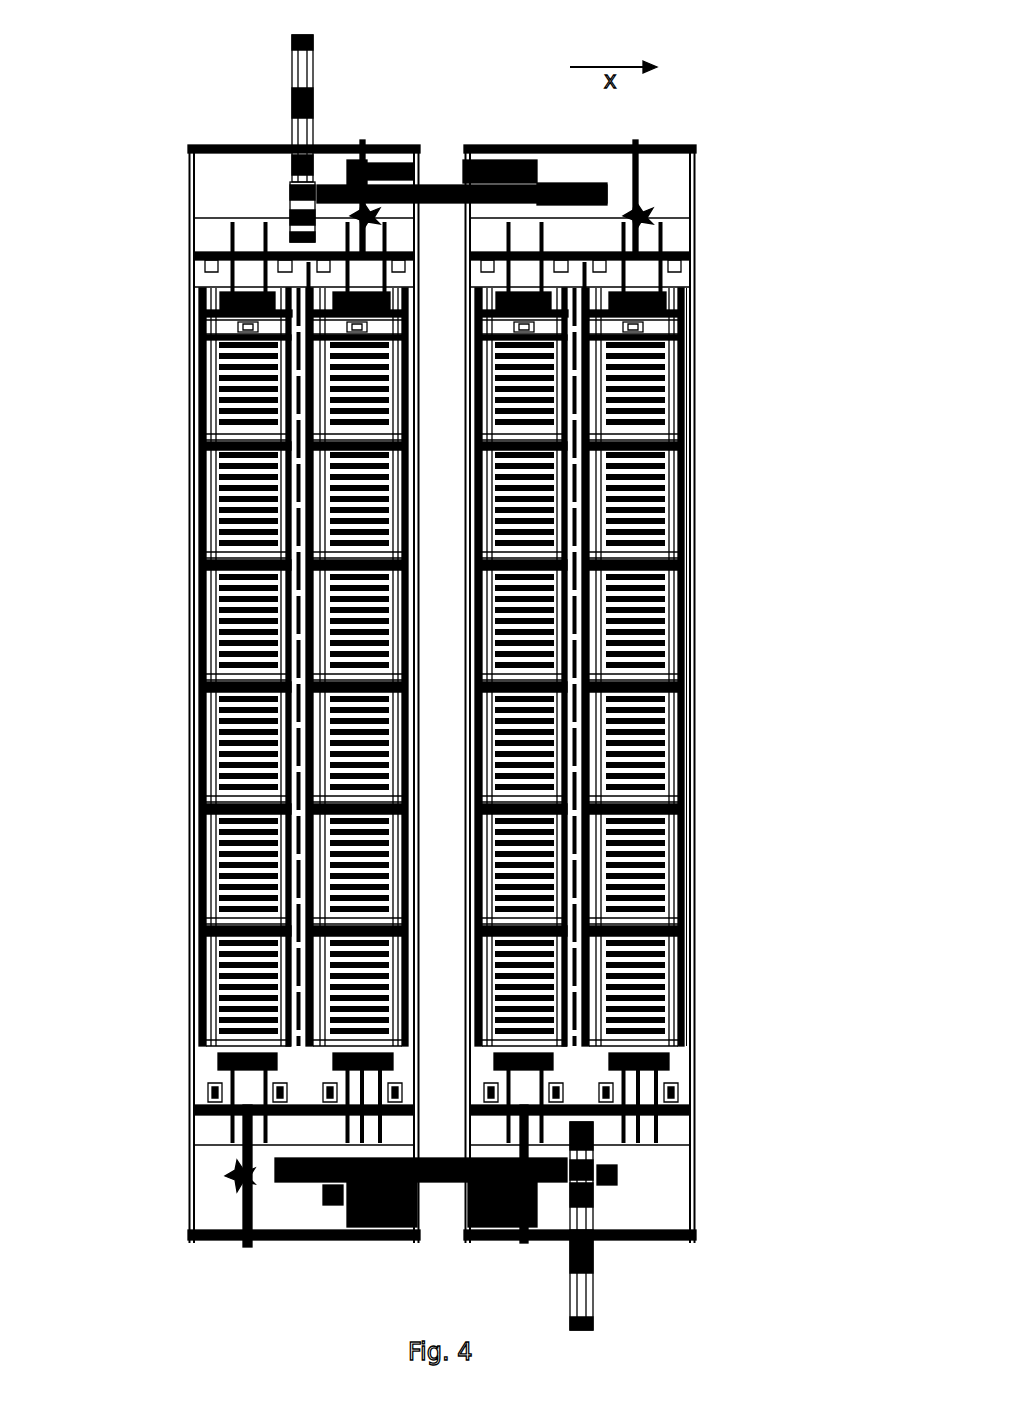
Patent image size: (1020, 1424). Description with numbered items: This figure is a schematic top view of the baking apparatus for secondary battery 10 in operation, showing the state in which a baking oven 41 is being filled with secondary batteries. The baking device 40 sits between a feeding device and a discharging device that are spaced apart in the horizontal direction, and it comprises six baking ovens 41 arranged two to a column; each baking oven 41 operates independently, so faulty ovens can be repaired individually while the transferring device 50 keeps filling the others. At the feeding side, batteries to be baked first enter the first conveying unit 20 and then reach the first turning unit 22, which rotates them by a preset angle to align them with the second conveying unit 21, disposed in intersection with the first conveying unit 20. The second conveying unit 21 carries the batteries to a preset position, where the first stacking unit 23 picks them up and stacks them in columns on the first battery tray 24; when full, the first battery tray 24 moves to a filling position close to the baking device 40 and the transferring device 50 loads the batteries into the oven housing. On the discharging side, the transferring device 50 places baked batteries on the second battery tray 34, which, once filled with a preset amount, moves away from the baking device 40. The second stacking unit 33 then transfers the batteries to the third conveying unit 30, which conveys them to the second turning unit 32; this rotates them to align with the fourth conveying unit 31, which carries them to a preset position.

The baking apparatus for secondary battery 10 is at (480, 30).
The first conveying unit 20 is at (296, 72).
The second conveying unit 21 is at (432, 185).
The first turning unit 22 is at (300, 195).
The first stacking unit 23 is at (355, 225).
The first battery tray 24 is at (222, 290).
The third conveying unit 30 is at (440, 1183).
The fourth conveying unit 31 is at (595, 1280).
The second turning unit 32 is at (618, 1172).
The second stacking unit 33 is at (530, 1138).
The second battery tray 34 is at (207, 1083).
The baking device 40 is at (492, 960).
The baking oven 41 is at (683, 965).
The transferring device 50 is at (212, 348).